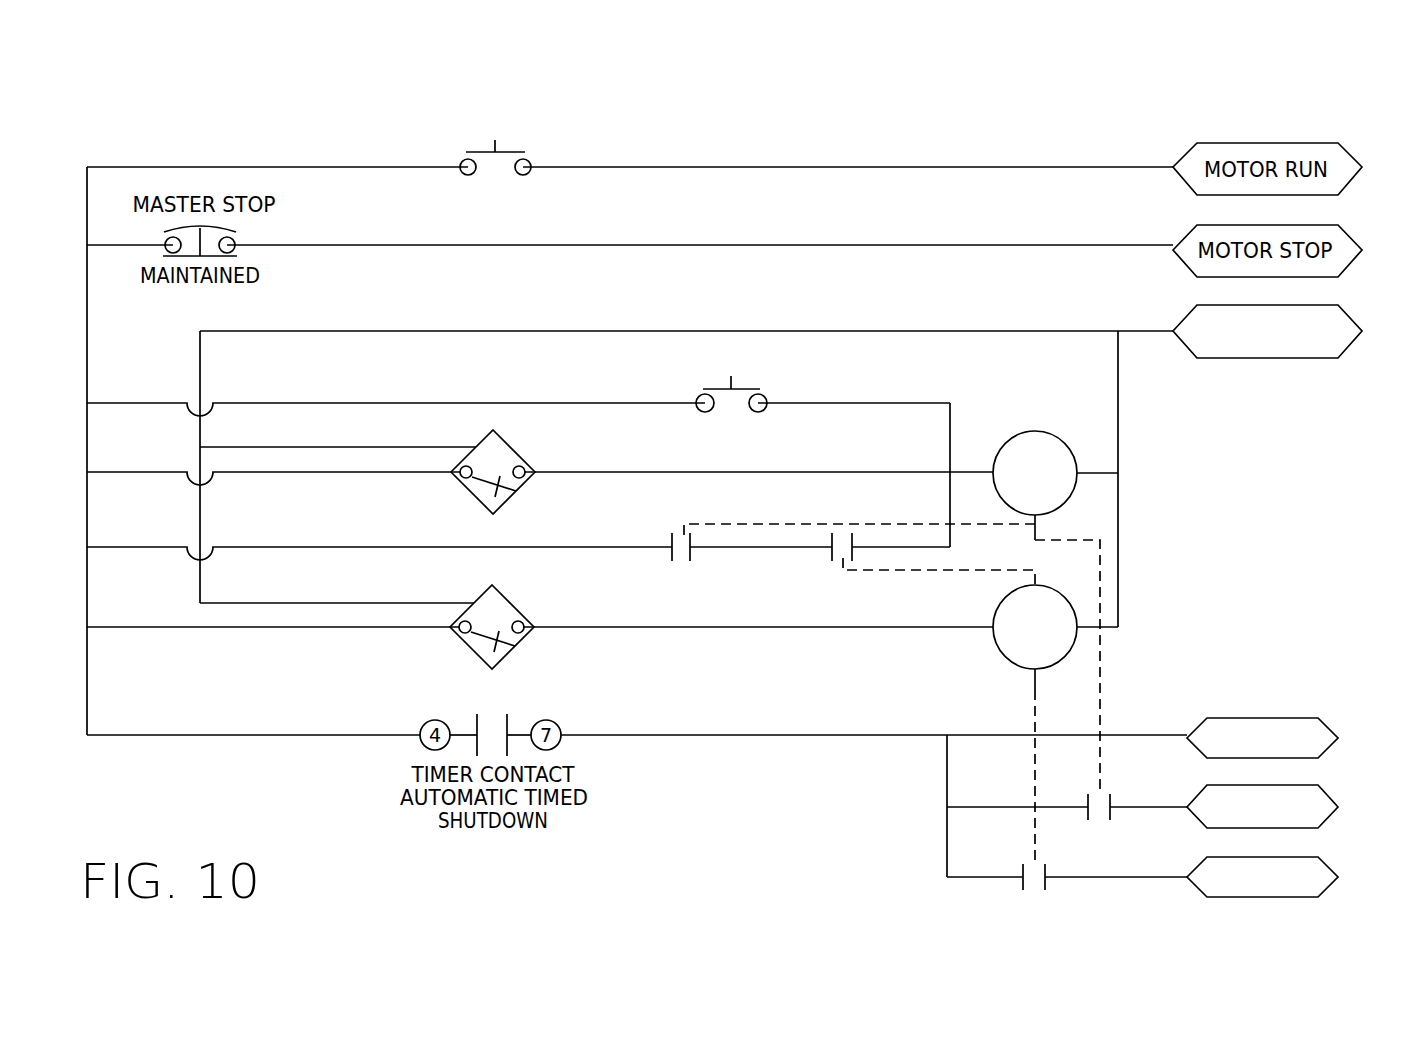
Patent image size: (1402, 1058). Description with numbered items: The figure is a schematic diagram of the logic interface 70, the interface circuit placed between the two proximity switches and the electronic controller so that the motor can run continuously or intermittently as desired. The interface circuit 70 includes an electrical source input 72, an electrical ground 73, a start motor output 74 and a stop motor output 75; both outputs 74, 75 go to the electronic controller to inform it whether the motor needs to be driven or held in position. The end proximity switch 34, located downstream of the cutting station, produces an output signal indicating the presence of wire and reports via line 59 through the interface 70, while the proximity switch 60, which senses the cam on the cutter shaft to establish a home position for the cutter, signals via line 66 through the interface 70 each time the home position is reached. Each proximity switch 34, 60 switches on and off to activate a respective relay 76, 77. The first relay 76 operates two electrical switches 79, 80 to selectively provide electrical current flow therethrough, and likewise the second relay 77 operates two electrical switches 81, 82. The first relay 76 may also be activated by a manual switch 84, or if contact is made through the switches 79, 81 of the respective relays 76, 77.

The logic interface 70 is at (797, 108).
The end proximity switch 34 is at (490, 506).
The line 59 is at (765, 470).
The proximity switch 60 is at (487, 600).
The line 66 is at (735, 628).
The electrical source input 72 is at (1240, 718).
The electrical ground 73 is at (1329, 339).
The start motor output 74 is at (1338, 806).
The stop motor output 75 is at (1320, 890).
The first relay 76 is at (1032, 431).
The second relay 77 is at (1012, 652).
The electrical switch 79 is at (681, 562).
The electrical switch 80 is at (1100, 816).
The electrical switch 81 is at (838, 563).
The electrical switch 82 is at (1030, 890).
The manual switch 84 is at (708, 382).